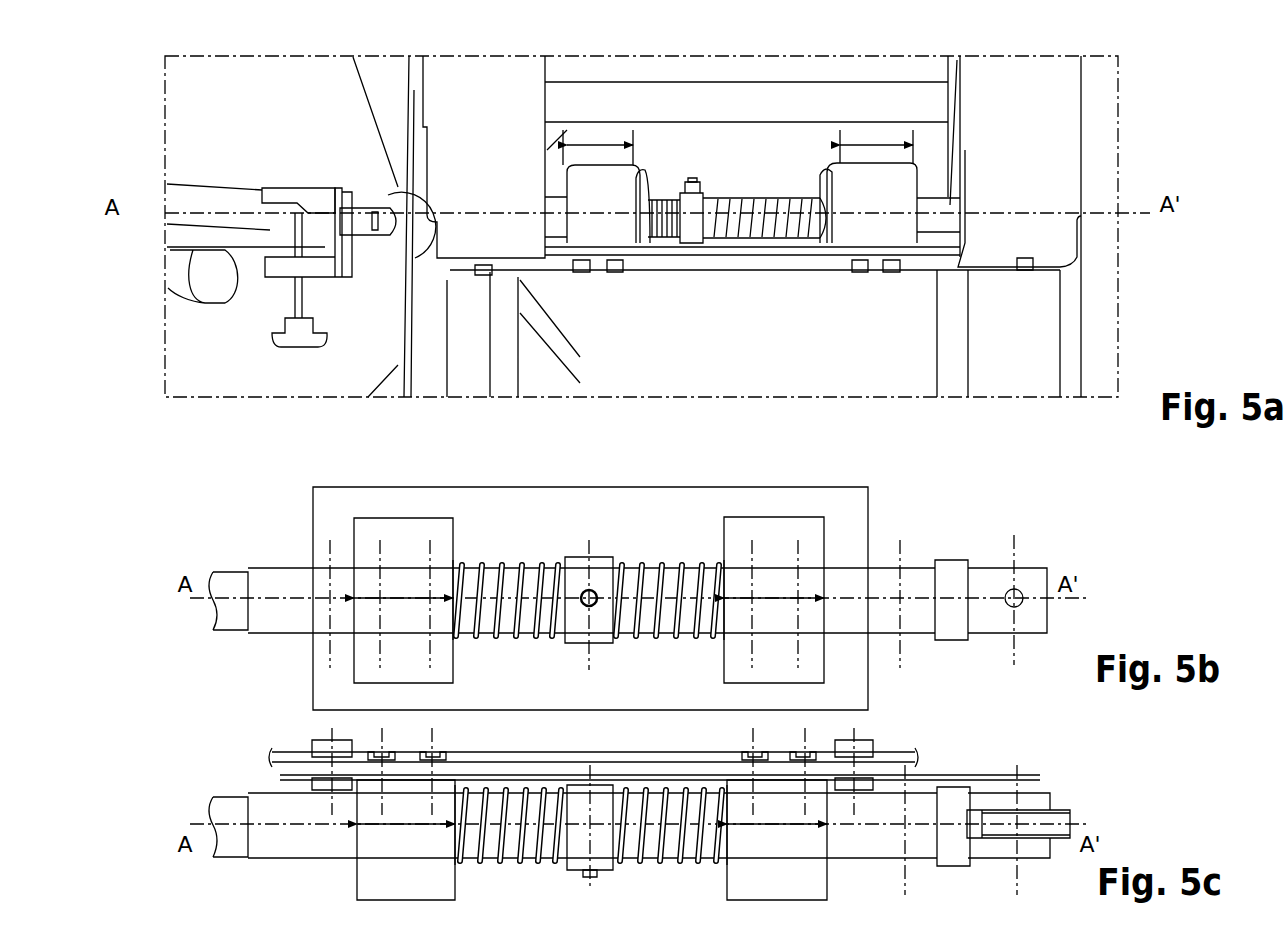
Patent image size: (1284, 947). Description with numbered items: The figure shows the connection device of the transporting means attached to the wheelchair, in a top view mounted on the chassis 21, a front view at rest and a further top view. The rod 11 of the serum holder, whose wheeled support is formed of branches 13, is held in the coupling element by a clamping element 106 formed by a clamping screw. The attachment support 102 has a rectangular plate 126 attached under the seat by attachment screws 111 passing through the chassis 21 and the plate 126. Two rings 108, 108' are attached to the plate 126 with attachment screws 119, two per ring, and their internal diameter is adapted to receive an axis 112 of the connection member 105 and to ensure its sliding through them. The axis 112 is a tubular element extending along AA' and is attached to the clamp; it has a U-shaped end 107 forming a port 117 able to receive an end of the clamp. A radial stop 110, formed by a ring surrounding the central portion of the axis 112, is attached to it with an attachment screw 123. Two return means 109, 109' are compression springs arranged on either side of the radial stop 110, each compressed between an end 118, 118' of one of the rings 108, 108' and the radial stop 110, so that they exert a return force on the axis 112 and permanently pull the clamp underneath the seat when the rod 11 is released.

In FIG. 5A, the connection member 105 is at (195, 160).
In FIG. 5B, the connection member 105 is at (265, 537).
In FIG. 5C, the connection member 105 is at (210, 778).
In FIG. 5A, the rod 11 is at (183, 207).
In FIG. 5A, the branches 13 is at (182, 241).
In FIG. 5A, the chassis 21 is at (470, 97).
In FIG. 5C, the chassis 21 is at (290, 757).
In FIG. 5C, the attachment support 102 is at (493, 787).
In FIG. 5A, the clamping element 106 is at (297, 347).
In FIG. 5A, the U-shaped end 107 is at (300, 187).
In FIG. 5B, the U-shaped end 107 is at (1035, 558).
In FIG. 5C, the U-shaped end 107 is at (1040, 805).
In FIG. 5A, the ring 108 is at (574, 129).
In FIG. 5B, the ring 108 is at (774, 564).
In FIG. 5C, the ring 108 is at (806, 850).
In FIG. 5A, the ring 108' is at (859, 128).
In FIG. 5B, the ring 108' is at (403, 567).
In FIG. 5C, the ring 108' is at (355, 840).
In FIG. 5A, the return means 109 is at (653, 123).
In FIG. 5B, the return means 109 is at (665, 544).
In FIG. 5C, the return means 109 is at (671, 850).
In FIG. 5A, the return means 109' is at (764, 125).
In FIG. 5B, the return means 109' is at (507, 543).
In FIG. 5C, the return means 109' is at (510, 850).
In FIG. 5A, the radial stop 110 is at (693, 190).
In FIG. 5B, the radial stop 110 is at (578, 560).
In FIG. 5C, the radial stop 110 is at (600, 792).
In FIG. 5A, the attachment screws 111 is at (470, 268).
In FIG. 5C, the attachment screws 111 is at (292, 750).
In FIG. 5A, the axis 112 is at (948, 207).
In FIG. 5B, the axis 112 is at (885, 580).
In FIG. 5C, the axis 112 is at (905, 830).
In FIG. 5C, the port 117 is at (1020, 835).
In FIG. 5A, the end of ring 118 is at (614, 129).
In FIG. 5B, the end of ring 118 is at (718, 546).
In FIG. 5C, the end of ring 118 is at (705, 857).
In FIG. 5A, the end of ring 118' is at (812, 308).
In FIG. 5B, the end of ring 118' is at (460, 546).
In FIG. 5C, the end of ring 118' is at (424, 855).
In FIG. 5A, the attachment screws 119 is at (582, 276).
In FIG. 5C, the attachment screws 119 is at (400, 750).
In FIG. 5A, the attachment screw 123 is at (707, 175).
In FIG. 5B, the attachment screw 123 is at (595, 608).
In FIG. 5C, the attachment screw 123 is at (590, 878).
In FIG. 5A, the plate 126 is at (928, 270).
In FIG. 5B, the plate 126 is at (805, 500).
In FIG. 5C, the plate 126 is at (890, 760).